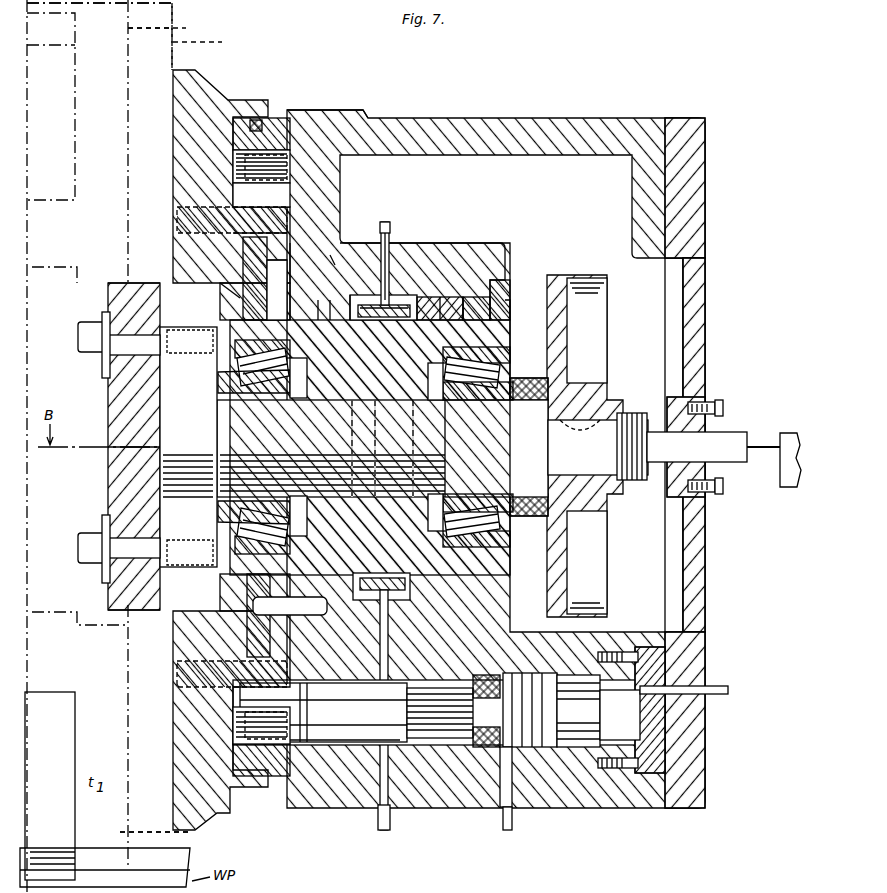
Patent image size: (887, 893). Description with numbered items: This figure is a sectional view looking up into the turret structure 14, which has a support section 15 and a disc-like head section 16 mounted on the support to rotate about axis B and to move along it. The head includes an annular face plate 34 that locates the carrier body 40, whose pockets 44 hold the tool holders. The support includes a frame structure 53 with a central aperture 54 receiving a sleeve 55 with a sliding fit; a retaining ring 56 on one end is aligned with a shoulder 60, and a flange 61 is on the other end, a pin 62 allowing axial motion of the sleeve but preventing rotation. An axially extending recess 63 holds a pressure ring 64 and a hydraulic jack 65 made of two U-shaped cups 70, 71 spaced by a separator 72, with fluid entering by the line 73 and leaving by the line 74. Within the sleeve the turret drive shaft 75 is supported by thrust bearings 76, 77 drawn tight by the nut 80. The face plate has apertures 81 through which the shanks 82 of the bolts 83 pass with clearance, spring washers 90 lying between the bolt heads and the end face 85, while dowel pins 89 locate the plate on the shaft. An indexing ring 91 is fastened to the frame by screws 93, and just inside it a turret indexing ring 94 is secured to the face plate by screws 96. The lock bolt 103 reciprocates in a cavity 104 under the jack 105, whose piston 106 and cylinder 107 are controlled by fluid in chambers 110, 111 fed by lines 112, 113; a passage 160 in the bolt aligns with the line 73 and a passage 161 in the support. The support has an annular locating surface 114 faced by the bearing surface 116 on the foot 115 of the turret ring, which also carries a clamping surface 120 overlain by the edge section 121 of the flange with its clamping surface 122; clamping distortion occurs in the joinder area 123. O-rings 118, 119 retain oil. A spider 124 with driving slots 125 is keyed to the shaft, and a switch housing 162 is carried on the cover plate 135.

The turret structure 14 is at (553, 111).
The support section 15 is at (372, 110).
The head section 16 is at (172, 14).
The face plate 34 is at (238, 298).
The carrier body 40 is at (173, 48).
The pockets 44 is at (186, 836).
The frame structure 53 is at (500, 246).
The aperture 54 is at (343, 312).
The sleeve 55 is at (475, 296).
The retaining ring 56 is at (512, 300).
The shoulder 60 is at (505, 285).
The flange 61 is at (255, 280).
The pin 62 is at (253, 606).
The recess 63 is at (440, 298).
The pressure ring 64 is at (455, 296).
The hydraulic jack 65 is at (372, 306).
The U-shaped cup 70 is at (384, 222).
The U-shaped cup 71 is at (425, 298).
The separator 72 is at (388, 300).
The line 73 is at (392, 650).
The line 74 is at (392, 303).
The turret drive shaft 75 is at (331, 421).
The thrust bearing 76 is at (258, 372).
The thrust bearing 77 is at (480, 375).
The nut 80 is at (530, 378).
The apertures 81 is at (108, 600).
The shanks 82 is at (125, 540).
The bolts 83 is at (78, 550).
The end face 85 is at (108, 455).
The dowel pins 89 is at (140, 525).
The spring washers 90 is at (102, 515).
The indexing ring 91 is at (233, 750).
The screws 93 is at (270, 152).
The indexing ring 94 is at (228, 682).
The screws 96 is at (175, 178).
The lock bolt 103 is at (350, 735).
The cavity 104 is at (440, 735).
The jack 105 is at (565, 750).
The piston 106 is at (525, 745).
The cylinder 107 is at (590, 750).
The chamber 110 is at (500, 750).
The chamber 111 is at (648, 715).
The line 112 is at (508, 830).
The line 113 is at (720, 686).
The locating surface 114 is at (318, 303).
The foot 115 is at (233, 247).
The bearing surface 116 is at (332, 302).
The O-ring 118 is at (257, 119).
The O-ring 119 is at (723, 412).
The clamping surface 120 is at (250, 660).
The edge section 121 is at (245, 648).
The clamping surface 122 is at (327, 262).
The joinder area 123 is at (300, 320).
The spider 124 is at (620, 321).
The driving slots 125 is at (590, 353).
The cover plate 135 is at (700, 573).
The passage 160 is at (400, 745).
The passage 161 is at (382, 820).
The housing 162 is at (786, 490).